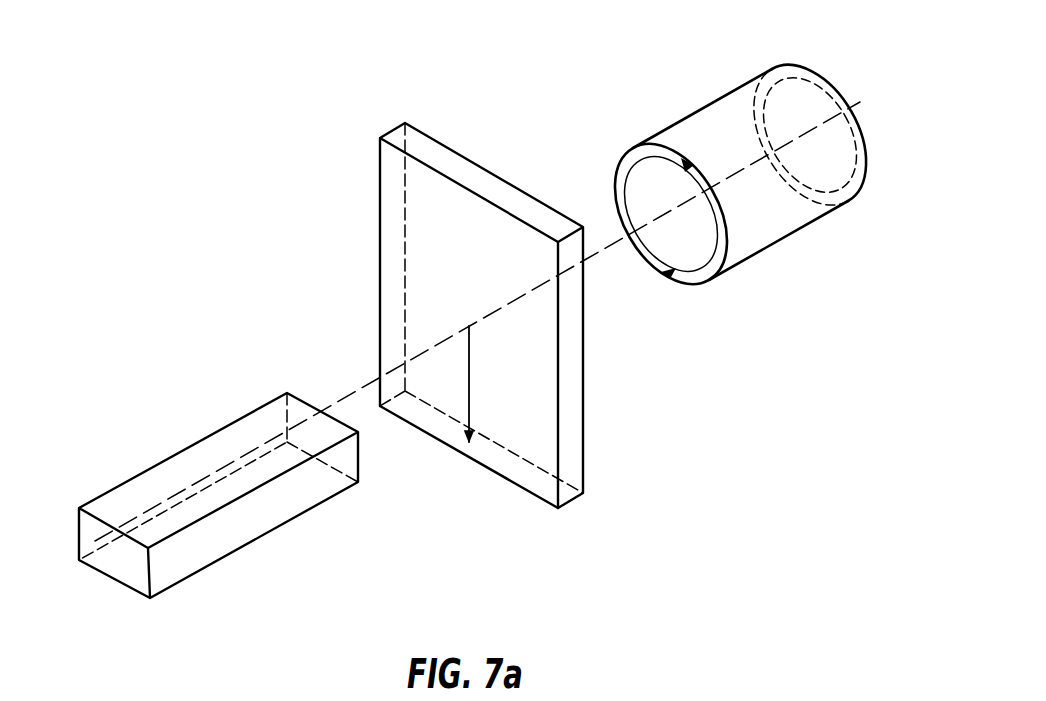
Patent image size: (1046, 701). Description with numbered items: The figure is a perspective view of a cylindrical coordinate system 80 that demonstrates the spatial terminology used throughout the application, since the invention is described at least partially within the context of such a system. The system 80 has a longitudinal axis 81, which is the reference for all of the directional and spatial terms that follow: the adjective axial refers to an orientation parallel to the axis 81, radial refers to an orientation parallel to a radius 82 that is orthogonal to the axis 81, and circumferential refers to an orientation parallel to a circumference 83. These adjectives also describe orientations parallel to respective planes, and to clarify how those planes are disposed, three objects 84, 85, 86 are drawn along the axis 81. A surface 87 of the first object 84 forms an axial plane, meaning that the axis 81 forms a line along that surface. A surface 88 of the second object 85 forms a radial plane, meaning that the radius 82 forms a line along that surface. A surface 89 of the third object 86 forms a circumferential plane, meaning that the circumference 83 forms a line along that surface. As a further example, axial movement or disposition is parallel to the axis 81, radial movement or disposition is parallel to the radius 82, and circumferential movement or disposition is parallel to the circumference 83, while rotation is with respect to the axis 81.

The cylindrical coordinate system 80 is at (326, 179).
The longitudinal axis 81 is at (852, 104).
The radius 82 is at (469, 385).
The circumference 83 is at (616, 174).
The object 84 is at (178, 583).
The object 85 is at (596, 497).
The object 86 is at (771, 251).
The surface 87 is at (172, 473).
The surface 88 is at (396, 270).
The surface 89 is at (701, 108).